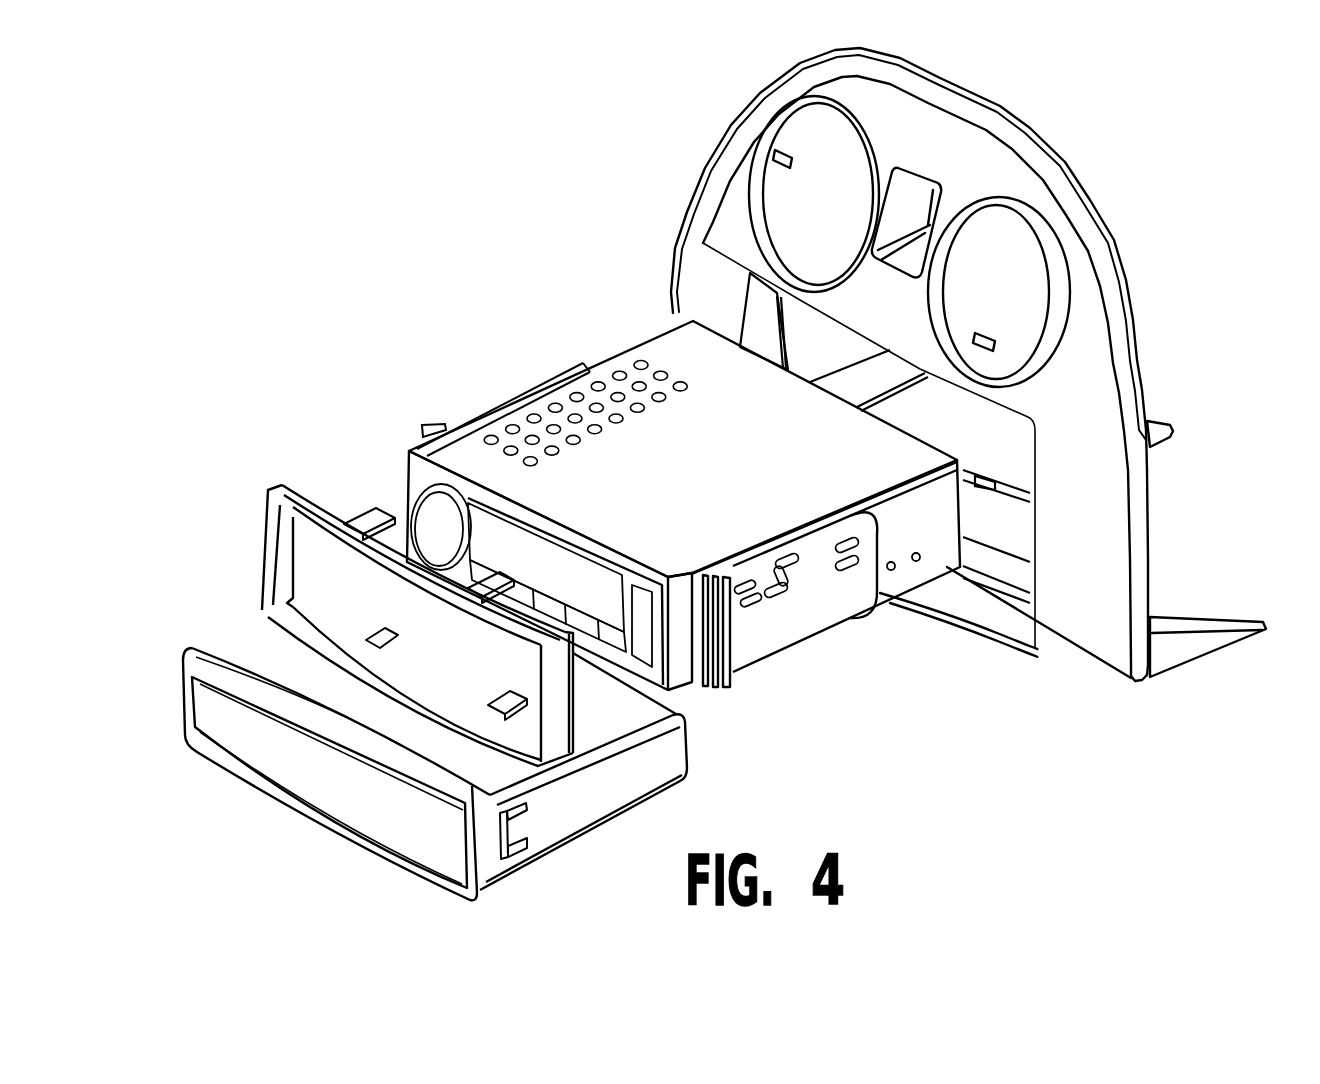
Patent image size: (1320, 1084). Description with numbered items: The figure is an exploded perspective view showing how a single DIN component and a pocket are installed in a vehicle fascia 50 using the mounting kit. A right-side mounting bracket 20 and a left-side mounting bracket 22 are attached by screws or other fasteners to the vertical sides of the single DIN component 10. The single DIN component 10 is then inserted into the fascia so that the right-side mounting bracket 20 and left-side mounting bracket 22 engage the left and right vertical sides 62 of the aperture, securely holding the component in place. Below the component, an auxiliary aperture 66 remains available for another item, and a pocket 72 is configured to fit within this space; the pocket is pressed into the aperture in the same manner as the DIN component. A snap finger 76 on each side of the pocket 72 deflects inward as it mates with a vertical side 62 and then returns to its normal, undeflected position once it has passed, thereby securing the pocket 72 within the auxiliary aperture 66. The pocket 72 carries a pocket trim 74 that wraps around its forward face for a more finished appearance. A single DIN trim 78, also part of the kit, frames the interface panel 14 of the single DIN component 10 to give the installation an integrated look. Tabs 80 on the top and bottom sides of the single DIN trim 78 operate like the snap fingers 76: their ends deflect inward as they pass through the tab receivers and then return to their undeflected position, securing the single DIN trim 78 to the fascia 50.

The single DIN component 10 is at (627, 484).
The interface panel 14 is at (493, 536).
The right-side mounting bracket 20 is at (826, 573).
The left-side mounting bracket 22 is at (485, 382).
The fascia 50 is at (924, 383).
The vertical sides 62 is at (685, 277).
The auxiliary aperture 66 is at (941, 534).
The pocket 72 is at (489, 778).
The pocket trim 74 is at (336, 774).
The snap finger 76 is at (550, 855).
The single DIN trim 78 is at (371, 600).
The tabs 80 is at (312, 487).